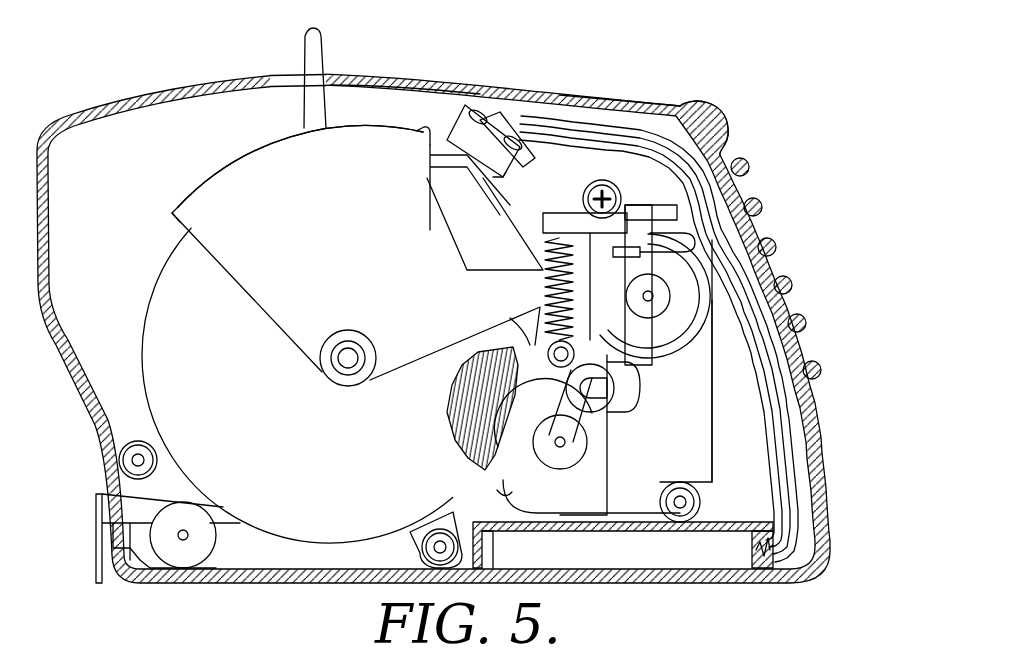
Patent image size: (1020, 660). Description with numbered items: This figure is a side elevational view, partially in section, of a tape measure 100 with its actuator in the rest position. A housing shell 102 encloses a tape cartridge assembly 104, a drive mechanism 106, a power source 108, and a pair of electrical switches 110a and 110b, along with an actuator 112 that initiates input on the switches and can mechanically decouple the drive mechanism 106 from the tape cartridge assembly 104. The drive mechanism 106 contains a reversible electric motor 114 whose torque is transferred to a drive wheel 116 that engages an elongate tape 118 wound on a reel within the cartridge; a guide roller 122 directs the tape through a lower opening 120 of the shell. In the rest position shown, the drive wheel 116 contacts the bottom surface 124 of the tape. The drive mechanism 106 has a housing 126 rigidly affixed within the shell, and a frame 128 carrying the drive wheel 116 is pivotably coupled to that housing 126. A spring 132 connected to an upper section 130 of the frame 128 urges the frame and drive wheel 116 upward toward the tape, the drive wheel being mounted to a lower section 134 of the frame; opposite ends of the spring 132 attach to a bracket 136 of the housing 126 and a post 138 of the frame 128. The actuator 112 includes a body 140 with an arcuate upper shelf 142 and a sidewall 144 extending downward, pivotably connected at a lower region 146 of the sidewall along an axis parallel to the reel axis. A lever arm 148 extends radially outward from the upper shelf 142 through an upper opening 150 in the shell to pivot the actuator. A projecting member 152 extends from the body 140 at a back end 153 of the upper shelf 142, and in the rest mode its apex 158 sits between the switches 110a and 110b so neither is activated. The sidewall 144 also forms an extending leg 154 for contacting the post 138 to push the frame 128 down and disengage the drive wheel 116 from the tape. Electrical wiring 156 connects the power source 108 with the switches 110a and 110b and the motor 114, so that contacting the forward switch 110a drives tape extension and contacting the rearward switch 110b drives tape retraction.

The tape measure 100 is at (604, 88).
The housing shell 102 is at (62, 125).
The tape cartridge assembly 104 is at (148, 300).
The drive mechanism 106 is at (718, 362).
The power source 108 is at (715, 535).
The forward electrical switch 110a is at (448, 135).
The rearward electrical switch 110b is at (517, 165).
The actuator 112 is at (195, 158).
The reversible electric motor 114 is at (778, 226).
The drive wheel 116 is at (455, 440).
The elongate tape 118 is at (505, 468).
The lower opening 120 is at (107, 488).
The guide roller 122 is at (210, 583).
The bottom surface 124 is at (233, 530).
The housing 126 is at (722, 430).
The frame 128 is at (587, 438).
The upper section 130 is at (515, 340).
The spring 132 is at (590, 298).
The lower section 134 is at (570, 462).
The bracket 136 is at (555, 227).
The post 138 is at (568, 356).
The body 140 is at (172, 200).
The arcuate upper shelf 142 is at (232, 152).
The sidewall 144 is at (250, 290).
The lower region 146 is at (292, 352).
The lever arm 148 is at (322, 34).
The upper opening 150 is at (395, 83).
The projecting member 152 is at (440, 190).
The back end 153 is at (420, 136).
The extending leg 154 is at (497, 270).
The electrical wiring 156 is at (728, 120).
The apex 158 is at (482, 116).